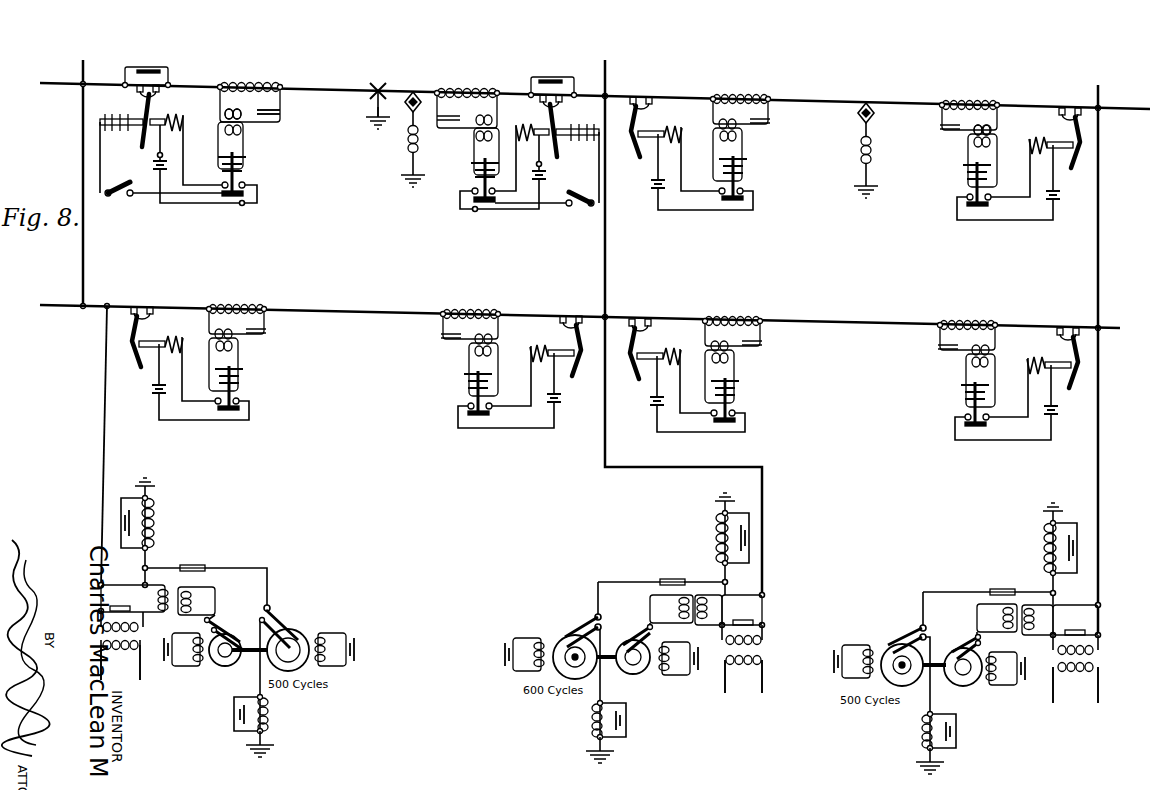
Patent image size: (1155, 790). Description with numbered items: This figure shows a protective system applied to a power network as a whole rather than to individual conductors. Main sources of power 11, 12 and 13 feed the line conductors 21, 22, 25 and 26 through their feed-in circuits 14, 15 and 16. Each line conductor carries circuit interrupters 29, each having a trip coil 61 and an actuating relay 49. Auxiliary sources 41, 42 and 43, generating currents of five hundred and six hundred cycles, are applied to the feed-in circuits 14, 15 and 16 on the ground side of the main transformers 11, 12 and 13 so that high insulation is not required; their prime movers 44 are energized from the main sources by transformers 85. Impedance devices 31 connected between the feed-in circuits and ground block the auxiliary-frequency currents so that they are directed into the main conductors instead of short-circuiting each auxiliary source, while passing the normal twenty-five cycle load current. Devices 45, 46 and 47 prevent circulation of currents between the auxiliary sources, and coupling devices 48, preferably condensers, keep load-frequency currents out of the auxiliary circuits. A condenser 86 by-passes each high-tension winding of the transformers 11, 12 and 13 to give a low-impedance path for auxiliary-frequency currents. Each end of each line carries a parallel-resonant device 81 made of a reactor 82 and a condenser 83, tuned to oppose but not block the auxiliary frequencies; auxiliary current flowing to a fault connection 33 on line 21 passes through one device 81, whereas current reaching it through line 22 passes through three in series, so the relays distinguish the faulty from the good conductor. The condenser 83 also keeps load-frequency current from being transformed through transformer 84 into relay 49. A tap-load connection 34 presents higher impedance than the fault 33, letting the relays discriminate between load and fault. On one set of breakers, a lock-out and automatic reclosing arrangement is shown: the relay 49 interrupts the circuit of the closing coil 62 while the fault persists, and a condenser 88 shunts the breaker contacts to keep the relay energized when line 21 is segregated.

The main source of power 11 is at (107, 675).
The main source of power 12 is at (737, 691).
The main source of power 13 is at (1069, 701).
The feed-in circuit 14 is at (105, 416).
The feed-in circuit 15 is at (607, 438).
The feed-in circuit 16 is at (1100, 411).
The line conductor 21 is at (340, 91).
The line conductor 22 is at (345, 311).
The line conductor 25 is at (838, 103).
The line conductor 26 is at (834, 322).
The circuit interrupter 29 is at (1068, 329).
The impedance device 31 is at (1048, 532).
The fault connection 33 is at (373, 101).
The tap-load connection 34 is at (421, 141).
The auxiliary source of power 41 is at (300, 642).
The auxiliary source of power 42 is at (570, 652).
The auxiliary source of power 43 is at (898, 660).
The prime mover 44 is at (972, 678).
The circulation-preventing device 45 is at (266, 713).
The circulation-preventing device 46 is at (630, 733).
The circulation-preventing device 47 is at (950, 748).
The coupling device 48 is at (997, 590).
The actuating relay 49 is at (244, 160).
The trip coil 61 is at (1033, 361).
The closing coil 62 is at (115, 116).
The parallel-resonant device 81 is at (607, 115).
The reactor 82 is at (250, 84).
The condenser 83 is at (272, 114).
The transformer 84 is at (220, 124).
The transformer 85 is at (693, 630).
The condenser 86 is at (1074, 630).
The high-frequency by-pass circuit 88 is at (152, 66).